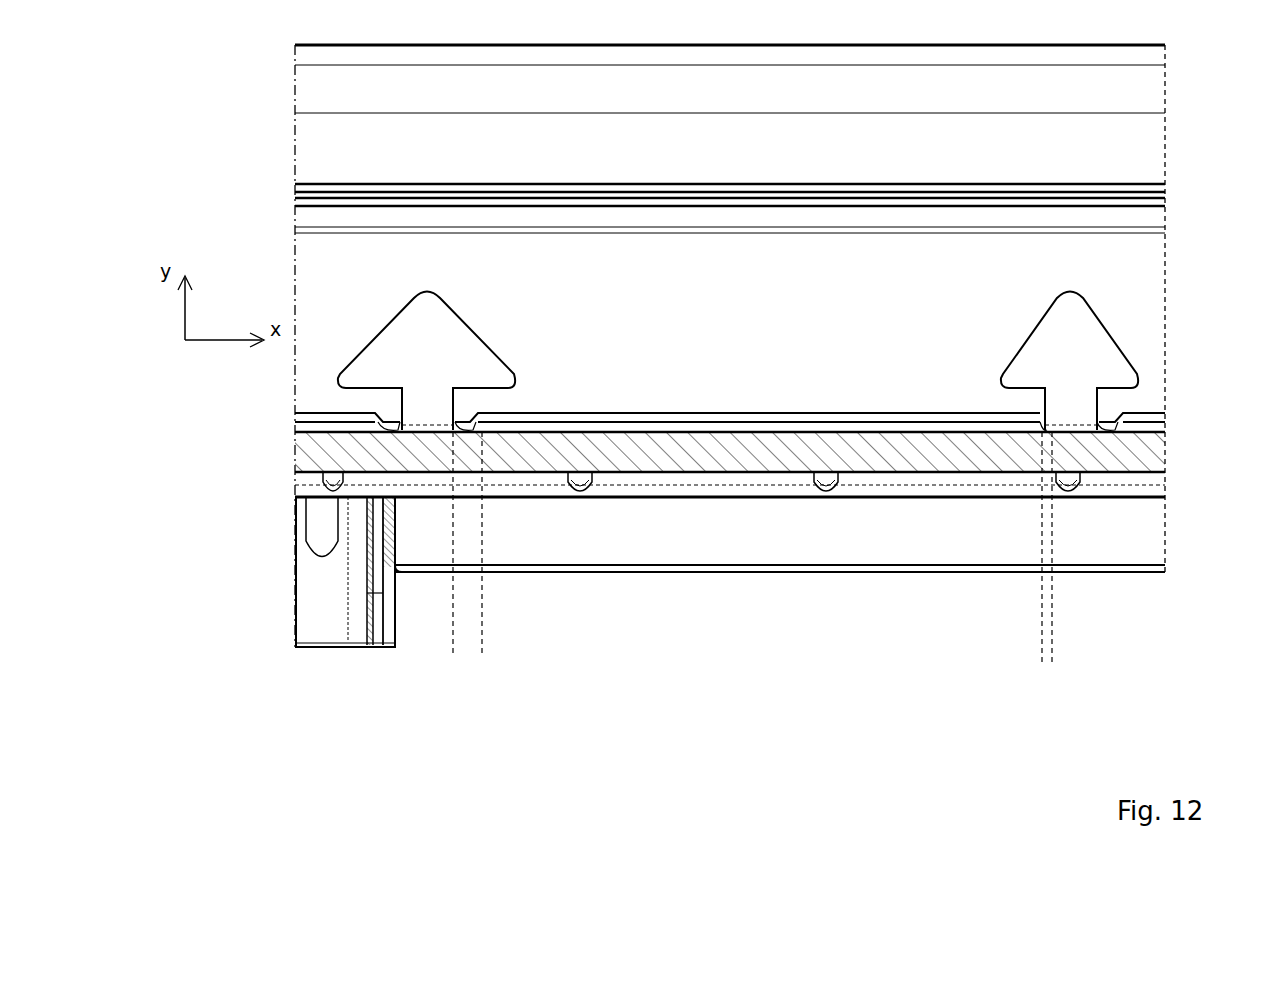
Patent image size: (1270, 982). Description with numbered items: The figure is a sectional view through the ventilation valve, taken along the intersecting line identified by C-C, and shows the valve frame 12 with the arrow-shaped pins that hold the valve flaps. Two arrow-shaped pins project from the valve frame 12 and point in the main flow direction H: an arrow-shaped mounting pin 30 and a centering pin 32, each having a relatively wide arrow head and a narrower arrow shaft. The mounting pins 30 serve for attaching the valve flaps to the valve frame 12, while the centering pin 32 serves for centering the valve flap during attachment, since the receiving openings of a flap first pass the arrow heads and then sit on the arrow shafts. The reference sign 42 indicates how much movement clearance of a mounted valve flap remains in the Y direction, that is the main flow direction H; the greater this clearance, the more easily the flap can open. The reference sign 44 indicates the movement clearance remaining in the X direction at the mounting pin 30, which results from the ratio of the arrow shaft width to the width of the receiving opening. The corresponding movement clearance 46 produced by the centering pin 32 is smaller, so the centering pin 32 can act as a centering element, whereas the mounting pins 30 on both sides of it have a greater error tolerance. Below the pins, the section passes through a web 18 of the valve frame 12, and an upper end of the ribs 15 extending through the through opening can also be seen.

The valve frame 12 is at (338, 145).
The web 18 is at (338, 462).
The mounting pin 30 is at (368, 306).
The centering pin 32 is at (1040, 306).
The movement clearance in the Y direction 42 is at (453, 387).
The movement clearance in the X direction 44 is at (482, 658).
The movement clearance of the centering pin 46 is at (1052, 664).
The rib 15 is at (828, 490).
The main flow direction H is at (868, 318).